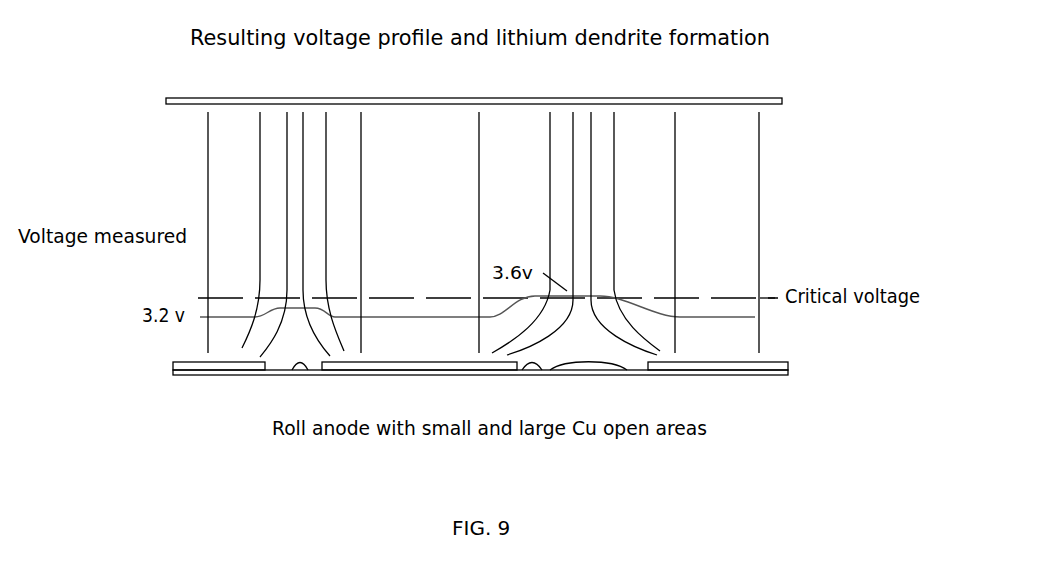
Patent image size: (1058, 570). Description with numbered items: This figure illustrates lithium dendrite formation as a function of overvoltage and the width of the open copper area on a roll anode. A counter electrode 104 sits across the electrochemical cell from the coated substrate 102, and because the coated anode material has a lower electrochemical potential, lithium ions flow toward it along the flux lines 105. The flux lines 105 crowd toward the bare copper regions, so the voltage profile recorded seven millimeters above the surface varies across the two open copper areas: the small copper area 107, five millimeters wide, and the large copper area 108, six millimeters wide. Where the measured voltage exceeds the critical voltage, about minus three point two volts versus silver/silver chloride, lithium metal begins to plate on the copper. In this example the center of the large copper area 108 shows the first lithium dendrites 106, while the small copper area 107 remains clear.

The coated substrate 102 is at (773, 359).
The counter electrode 104 is at (474, 87).
The flux lines 105 is at (767, 186).
The lithium dendrites 106 is at (585, 367).
The small copper area 107 is at (306, 367).
The large copper area 108 is at (525, 361).